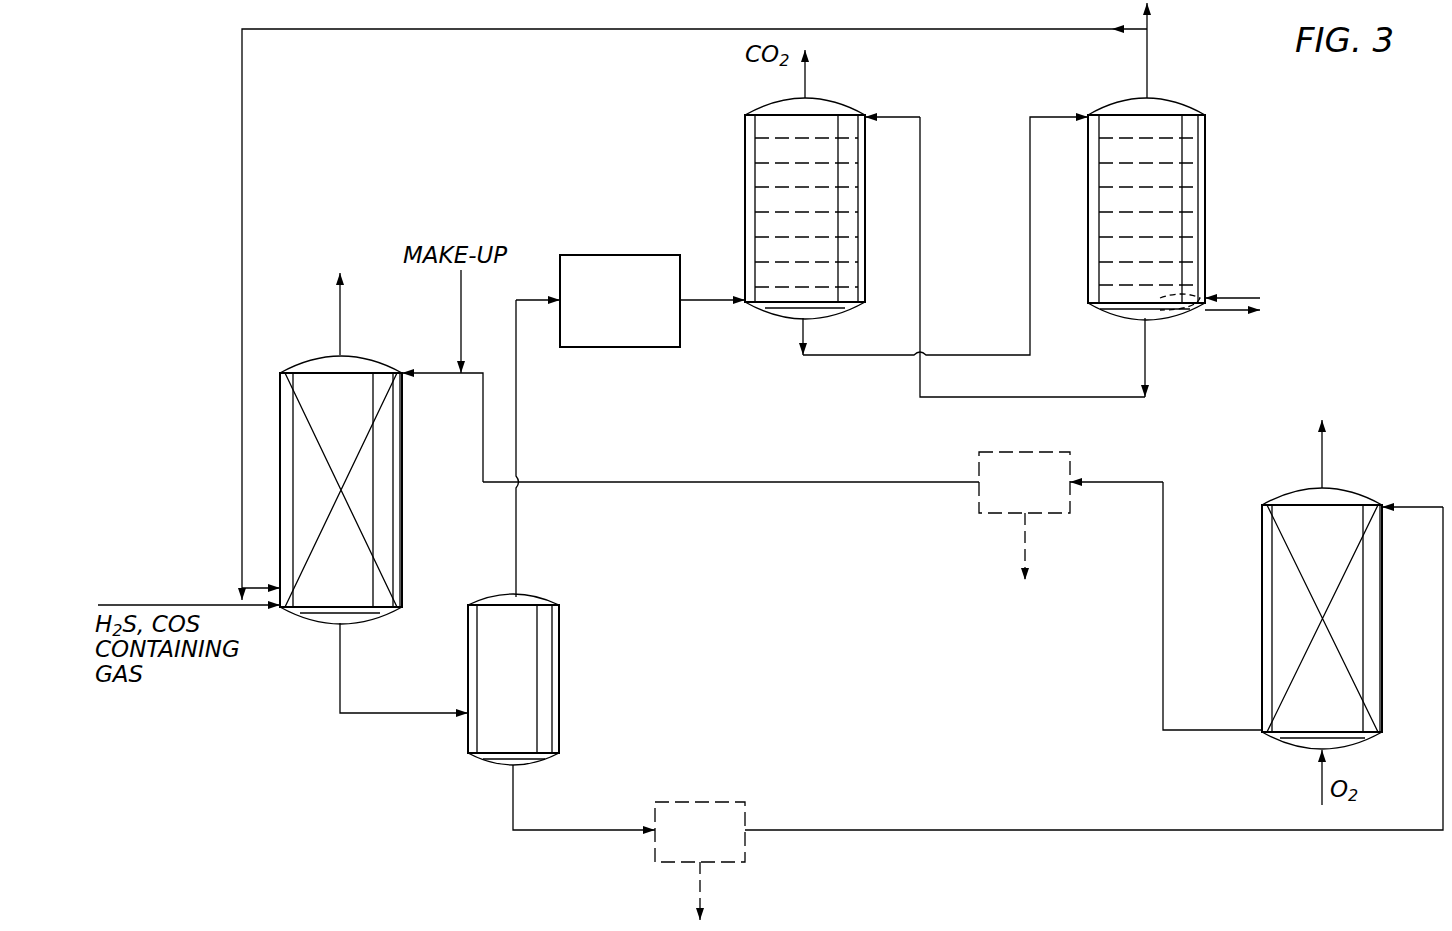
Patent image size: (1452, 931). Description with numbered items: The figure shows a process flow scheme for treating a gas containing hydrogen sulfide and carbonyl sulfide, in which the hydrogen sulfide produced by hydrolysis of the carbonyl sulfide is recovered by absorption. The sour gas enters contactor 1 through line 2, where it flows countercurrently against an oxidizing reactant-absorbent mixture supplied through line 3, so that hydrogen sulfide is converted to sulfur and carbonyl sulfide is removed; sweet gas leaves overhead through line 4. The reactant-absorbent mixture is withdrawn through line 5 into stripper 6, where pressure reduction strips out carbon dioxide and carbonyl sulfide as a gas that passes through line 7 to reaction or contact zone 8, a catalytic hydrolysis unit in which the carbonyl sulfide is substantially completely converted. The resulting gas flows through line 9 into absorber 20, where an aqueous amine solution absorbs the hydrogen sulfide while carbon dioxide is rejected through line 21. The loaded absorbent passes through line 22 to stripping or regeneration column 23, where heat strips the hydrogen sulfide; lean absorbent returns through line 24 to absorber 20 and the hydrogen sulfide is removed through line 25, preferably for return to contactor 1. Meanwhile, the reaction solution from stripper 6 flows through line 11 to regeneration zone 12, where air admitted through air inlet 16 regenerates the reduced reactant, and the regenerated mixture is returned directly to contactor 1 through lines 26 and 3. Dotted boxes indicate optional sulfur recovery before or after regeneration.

The contactor 1 is at (403, 520).
The line 2 is at (170, 600).
The line 3 is at (442, 376).
The line 4 is at (338, 305).
The line 5 is at (398, 715).
The stripper 6 is at (560, 660).
The line 7 is at (517, 411).
The reaction or contact zone 8 is at (608, 255).
The line 9 is at (712, 302).
The line 11 is at (570, 832).
The regeneration zone 12 is at (1261, 562).
The air inlet 16 is at (1320, 773).
The absorber 20 is at (744, 160).
The line 21 is at (807, 82).
The line 22 is at (855, 357).
The stripping or regeneration column 23 is at (1207, 195).
The line 24 is at (1147, 363).
The line 25 is at (1149, 68).
The line 26 is at (822, 486).